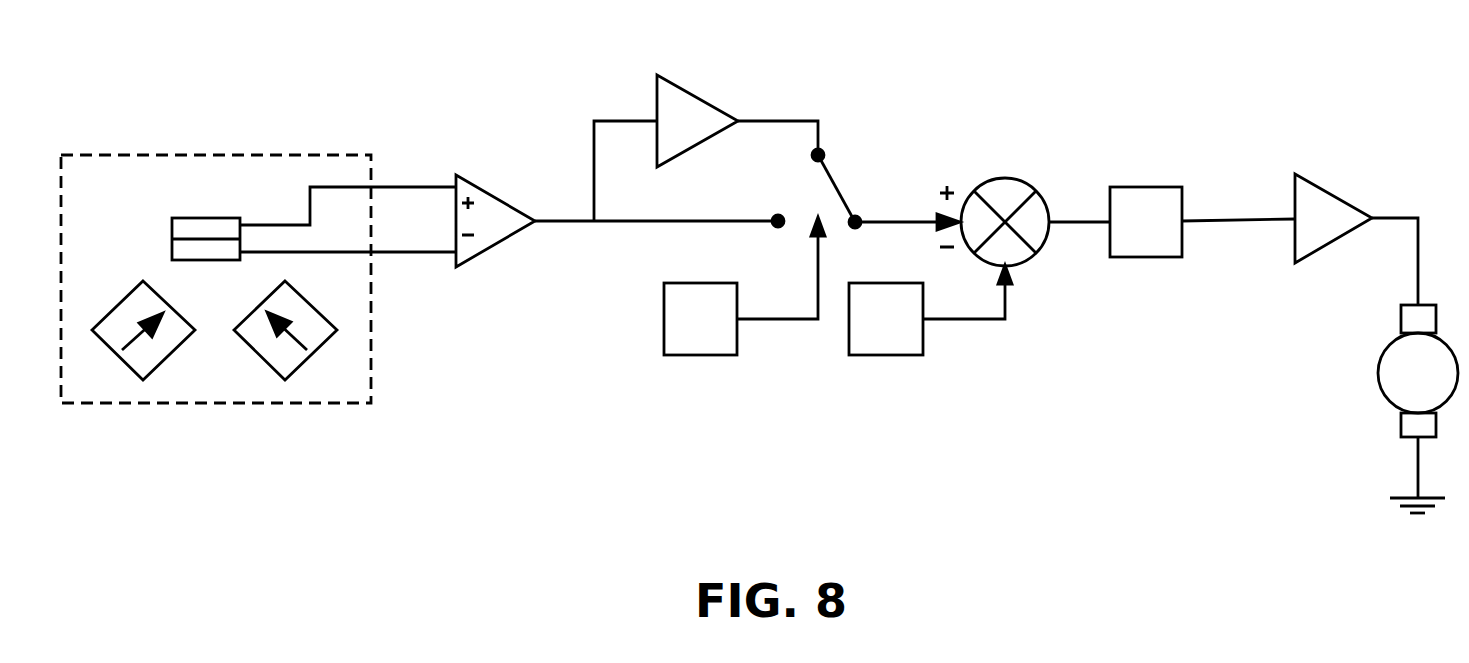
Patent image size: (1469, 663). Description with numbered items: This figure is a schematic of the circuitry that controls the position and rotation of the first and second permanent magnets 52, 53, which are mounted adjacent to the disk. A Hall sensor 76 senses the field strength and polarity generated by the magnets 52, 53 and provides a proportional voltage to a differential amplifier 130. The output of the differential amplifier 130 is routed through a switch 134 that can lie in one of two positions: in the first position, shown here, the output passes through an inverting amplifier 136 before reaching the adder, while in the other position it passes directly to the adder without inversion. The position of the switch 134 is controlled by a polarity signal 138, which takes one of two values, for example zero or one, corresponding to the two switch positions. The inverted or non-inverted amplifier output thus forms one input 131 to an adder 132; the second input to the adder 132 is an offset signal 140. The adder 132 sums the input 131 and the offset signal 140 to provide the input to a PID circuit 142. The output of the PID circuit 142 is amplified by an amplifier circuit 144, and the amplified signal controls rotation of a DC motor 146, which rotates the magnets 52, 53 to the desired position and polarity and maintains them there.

The Hall sensor 76 is at (220, 217).
The first permanent magnet 52 is at (157, 373).
The second permanent magnet 53 is at (260, 362).
The differential amplifier 130 is at (512, 195).
The inverting amplifier 136 is at (668, 80).
The switch 134 is at (833, 187).
The polarity signal 138 is at (697, 355).
The offset signal 140 is at (882, 355).
The input to the adder 131 is at (892, 222).
The adder 132 is at (1027, 180).
The PID circuit 142 is at (1137, 257).
The amplifier circuit 144 is at (1313, 182).
The DC motor 146 is at (1377, 367).